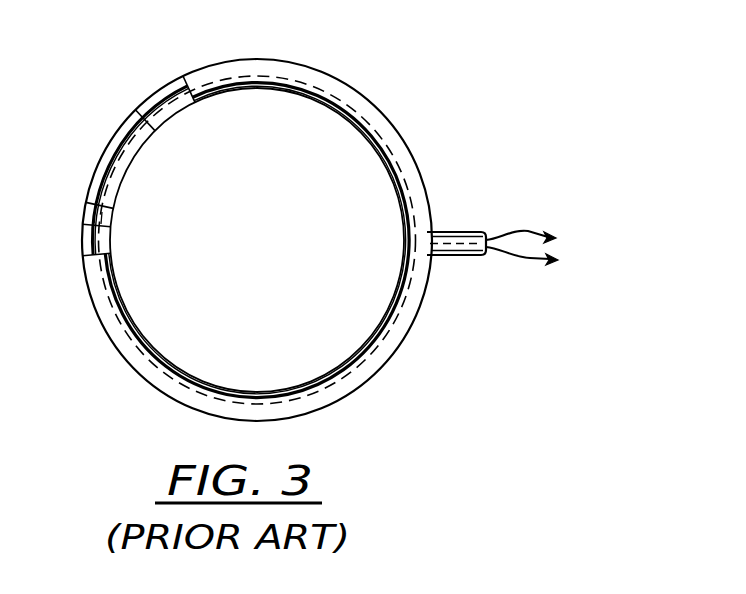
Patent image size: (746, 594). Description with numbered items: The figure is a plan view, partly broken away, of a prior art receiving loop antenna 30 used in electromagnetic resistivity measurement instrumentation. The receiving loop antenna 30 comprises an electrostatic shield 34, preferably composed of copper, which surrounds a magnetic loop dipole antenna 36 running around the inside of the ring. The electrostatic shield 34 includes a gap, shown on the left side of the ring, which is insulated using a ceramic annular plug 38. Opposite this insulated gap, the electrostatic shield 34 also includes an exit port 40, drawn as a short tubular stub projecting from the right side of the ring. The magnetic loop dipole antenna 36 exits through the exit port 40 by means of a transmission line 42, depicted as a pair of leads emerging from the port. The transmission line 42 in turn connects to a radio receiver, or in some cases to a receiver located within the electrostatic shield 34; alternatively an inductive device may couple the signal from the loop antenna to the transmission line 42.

The receiving loop antenna 30 is at (355, 73).
The electrostatic shield 34 is at (382, 114).
The magnetic loop dipole antenna 36 is at (134, 112).
The ceramic annular plug 38 is at (83, 240).
The exit port 40 is at (488, 235).
The transmission line 42 is at (528, 223).